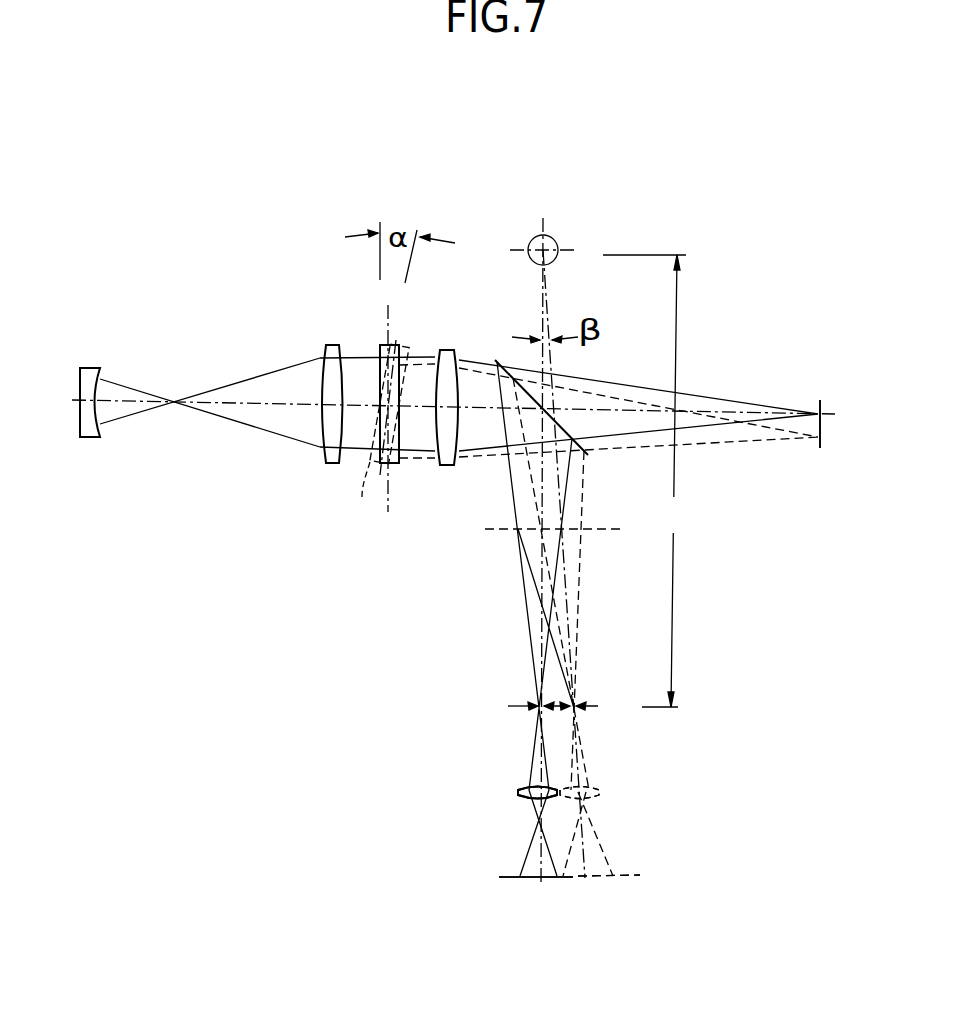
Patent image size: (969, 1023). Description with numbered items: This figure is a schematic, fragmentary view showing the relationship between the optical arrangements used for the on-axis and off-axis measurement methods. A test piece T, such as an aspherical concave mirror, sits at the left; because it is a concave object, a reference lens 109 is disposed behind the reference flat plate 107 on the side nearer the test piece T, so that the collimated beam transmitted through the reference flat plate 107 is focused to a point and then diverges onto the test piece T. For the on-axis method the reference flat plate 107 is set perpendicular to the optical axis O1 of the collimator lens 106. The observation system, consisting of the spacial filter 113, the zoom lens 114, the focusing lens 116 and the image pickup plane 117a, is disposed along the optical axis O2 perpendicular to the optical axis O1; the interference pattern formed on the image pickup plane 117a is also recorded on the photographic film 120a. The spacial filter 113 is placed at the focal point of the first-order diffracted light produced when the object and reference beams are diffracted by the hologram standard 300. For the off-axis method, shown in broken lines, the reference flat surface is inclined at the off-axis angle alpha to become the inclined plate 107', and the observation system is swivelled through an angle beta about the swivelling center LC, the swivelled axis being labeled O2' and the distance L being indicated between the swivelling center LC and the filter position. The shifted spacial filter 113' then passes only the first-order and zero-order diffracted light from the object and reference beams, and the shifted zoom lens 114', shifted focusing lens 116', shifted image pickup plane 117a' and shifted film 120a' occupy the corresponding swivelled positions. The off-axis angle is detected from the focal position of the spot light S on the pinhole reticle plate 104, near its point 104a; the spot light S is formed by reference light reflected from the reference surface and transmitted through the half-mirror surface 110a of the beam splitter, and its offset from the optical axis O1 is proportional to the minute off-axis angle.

The test piece T is at (92, 372).
The reference lens 109 is at (330, 446).
The reference flat plate 107 is at (359, 381).
The inclined reference flat plate 107' is at (374, 436).
The collimator lens 106 is at (443, 349).
The swivelling center LC is at (556, 243).
The distance L is at (644, 481).
The half-mirror surface 110a is at (588, 455).
The hologram standard 300 is at (482, 533).
The optical axis O1 is at (668, 412).
The optical axis O2 is at (503, 650).
The swivelled optical axis O2' is at (589, 564).
The pinhole reticle plate 104 is at (818, 402).
The image point 104a is at (820, 400).
The spot light S is at (818, 440).
The spacial filter 113 is at (500, 724).
The shifted spacial filter 113' is at (601, 725).
The zoom lens 114 is at (472, 808).
The focusing lens 116 is at (537, 793).
The shifted zoom lens 114' is at (649, 796).
The shifted focusing lens 116' is at (579, 793).
The image pickup plane 117a is at (534, 905).
The photographic film 120a is at (529, 918).
The shifted image pickup plane 117a' is at (624, 904).
The shifted photographic film 120a' is at (632, 917).